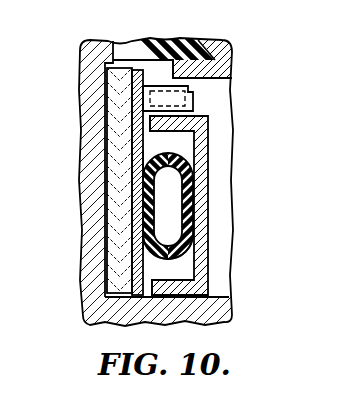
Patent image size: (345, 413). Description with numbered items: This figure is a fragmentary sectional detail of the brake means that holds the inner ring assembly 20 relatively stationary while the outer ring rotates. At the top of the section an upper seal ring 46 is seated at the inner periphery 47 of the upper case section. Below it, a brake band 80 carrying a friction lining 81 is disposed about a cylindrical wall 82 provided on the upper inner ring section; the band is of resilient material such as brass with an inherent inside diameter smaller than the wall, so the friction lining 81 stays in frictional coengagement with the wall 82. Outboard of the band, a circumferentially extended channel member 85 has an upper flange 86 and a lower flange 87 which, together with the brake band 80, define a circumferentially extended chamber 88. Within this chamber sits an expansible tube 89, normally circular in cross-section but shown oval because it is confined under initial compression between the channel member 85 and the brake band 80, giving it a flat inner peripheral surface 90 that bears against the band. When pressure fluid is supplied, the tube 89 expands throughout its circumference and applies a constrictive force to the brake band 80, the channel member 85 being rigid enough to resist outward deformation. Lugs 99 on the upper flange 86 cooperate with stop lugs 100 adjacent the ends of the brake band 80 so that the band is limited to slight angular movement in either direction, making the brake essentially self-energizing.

The inner ring assembly 20 is at (218, 310).
The upper seal ring 46 is at (188, 42).
The inner periphery 47 is at (224, 58).
The brake band 80 is at (132, 226).
The friction lining 81 is at (113, 95).
The cylindrical wall 82 is at (138, 152).
The channel member 85 is at (200, 156).
The upper flange 86 is at (190, 125).
The lower flange 87 is at (175, 287).
The chamber 88 is at (185, 262).
The expansible tube 89 is at (192, 200).
The flat inner peripheral surface 90 is at (143, 199).
The lugs 99 is at (193, 105).
The stop lugs 100 is at (163, 86).